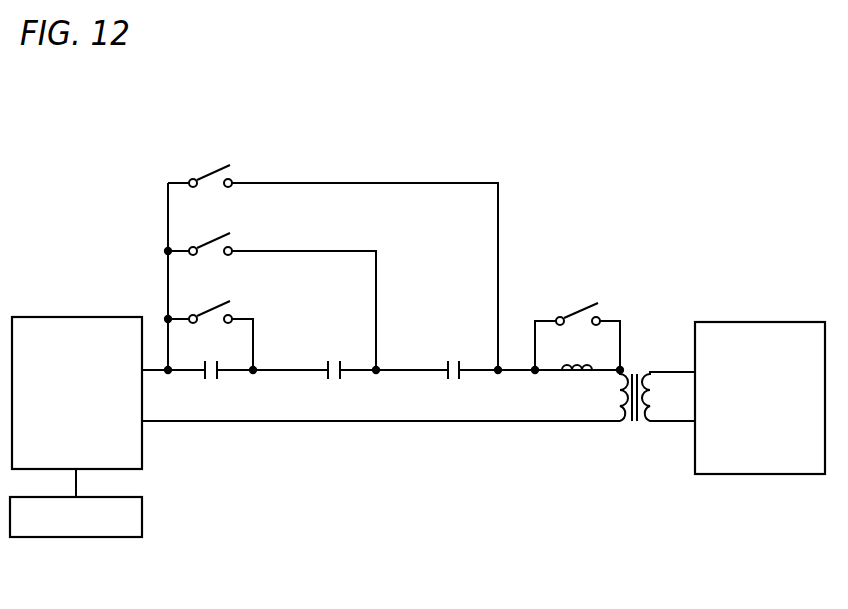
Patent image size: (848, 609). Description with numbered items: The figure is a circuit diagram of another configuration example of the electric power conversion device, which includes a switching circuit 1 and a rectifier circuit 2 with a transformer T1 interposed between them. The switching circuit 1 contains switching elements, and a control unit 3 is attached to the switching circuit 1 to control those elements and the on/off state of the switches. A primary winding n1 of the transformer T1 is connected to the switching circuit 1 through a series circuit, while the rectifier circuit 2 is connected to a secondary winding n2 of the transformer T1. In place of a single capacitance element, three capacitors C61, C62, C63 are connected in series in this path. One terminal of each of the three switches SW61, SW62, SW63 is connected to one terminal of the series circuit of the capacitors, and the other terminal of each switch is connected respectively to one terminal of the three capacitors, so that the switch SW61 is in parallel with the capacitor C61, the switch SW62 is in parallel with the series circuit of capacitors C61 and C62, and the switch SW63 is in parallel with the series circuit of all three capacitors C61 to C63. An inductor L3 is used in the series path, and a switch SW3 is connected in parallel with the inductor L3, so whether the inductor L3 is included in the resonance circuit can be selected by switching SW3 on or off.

The switching circuit 1 is at (75, 317).
The rectifier circuit 2 is at (759, 324).
The control unit 3 is at (77, 538).
The switch SW61 is at (211, 323).
The switch SW62 is at (272, 289).
The switch SW63 is at (335, 255).
The switch SW3 is at (578, 324).
The capacitor C61 is at (197, 356).
The capacitor C62 is at (332, 356).
The capacitor C63 is at (454, 356).
The inductor L3 is at (577, 354).
The transformer T1 is at (641, 415).
The primary winding n1 is at (607, 395).
The secondary winding n2 is at (668, 396).